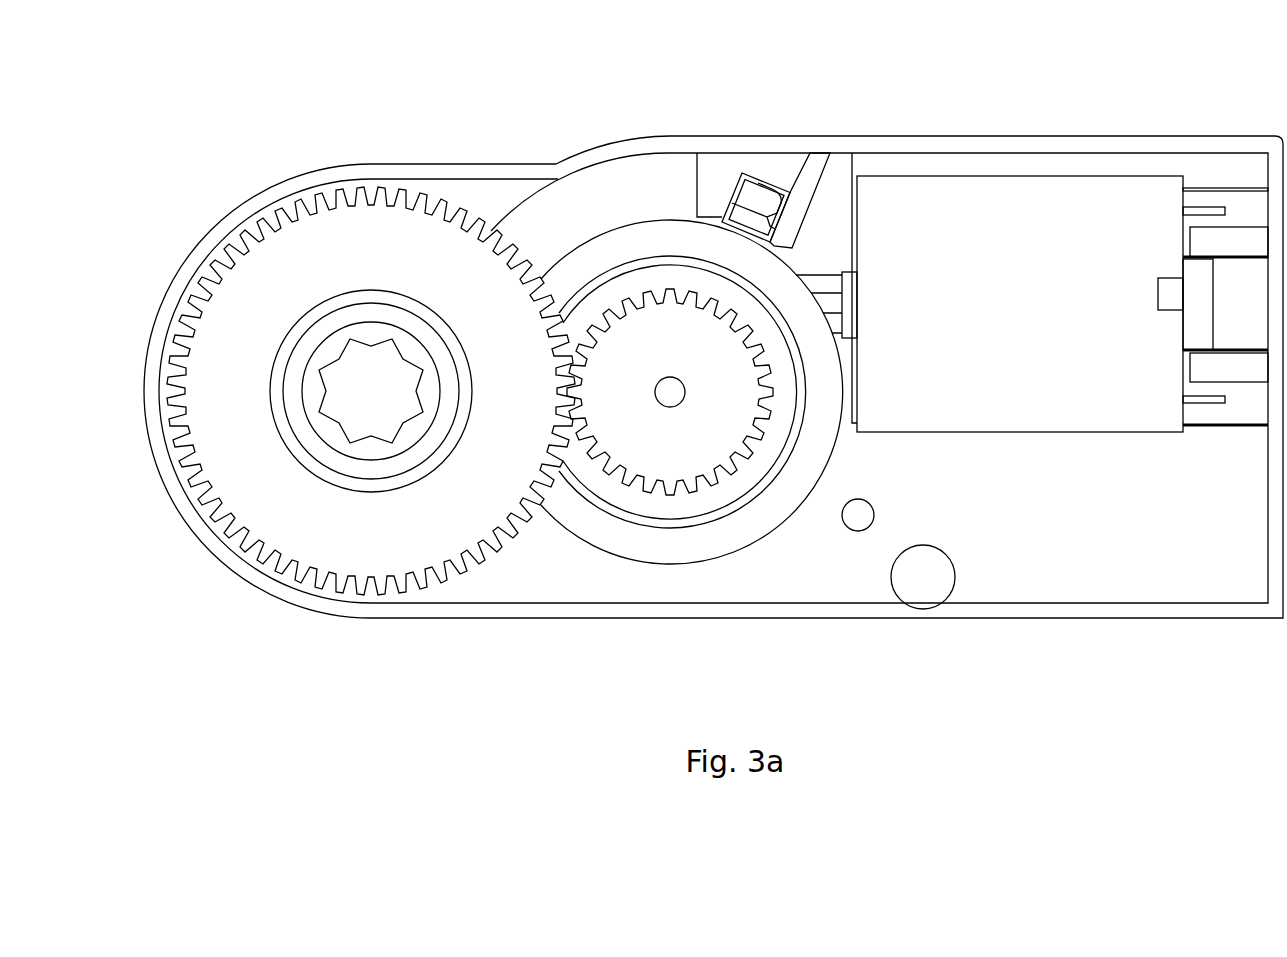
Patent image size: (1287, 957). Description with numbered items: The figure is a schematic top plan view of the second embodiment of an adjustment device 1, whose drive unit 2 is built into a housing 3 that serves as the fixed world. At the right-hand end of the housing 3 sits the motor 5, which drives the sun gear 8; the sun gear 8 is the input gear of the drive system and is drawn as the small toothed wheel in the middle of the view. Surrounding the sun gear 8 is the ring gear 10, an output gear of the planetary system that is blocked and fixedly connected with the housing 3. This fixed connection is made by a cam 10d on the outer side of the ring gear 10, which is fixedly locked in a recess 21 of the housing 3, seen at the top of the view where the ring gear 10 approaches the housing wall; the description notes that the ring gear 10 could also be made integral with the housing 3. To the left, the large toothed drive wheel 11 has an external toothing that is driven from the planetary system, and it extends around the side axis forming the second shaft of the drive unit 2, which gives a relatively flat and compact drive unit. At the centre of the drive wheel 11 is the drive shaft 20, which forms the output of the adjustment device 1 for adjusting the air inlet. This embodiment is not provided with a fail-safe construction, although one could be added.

The adjustment device 1 is at (713, 338).
The drive unit 2 is at (482, 123).
The housing 3 is at (628, 153).
The motor 5 is at (1082, 230).
The sun gear 8 is at (670, 460).
The ring gear 10 is at (738, 528).
The cam 10d is at (752, 217).
The drive wheel 11 is at (455, 535).
The drive shaft 20 is at (357, 413).
The recess 21 is at (790, 192).